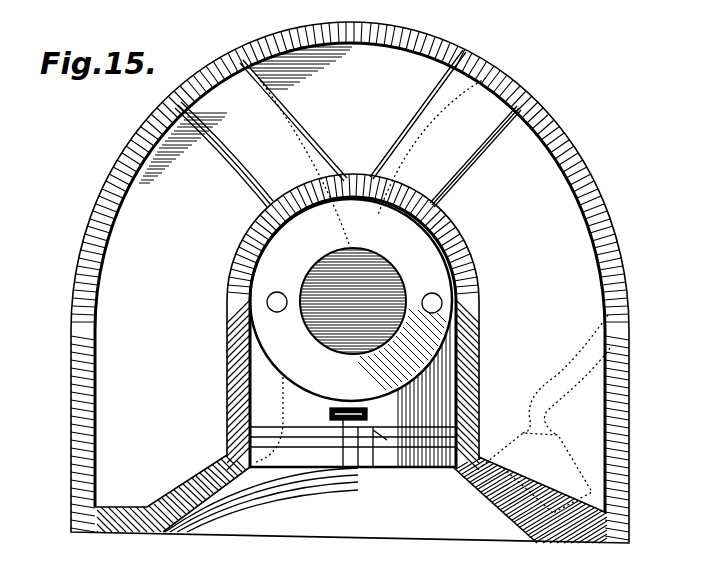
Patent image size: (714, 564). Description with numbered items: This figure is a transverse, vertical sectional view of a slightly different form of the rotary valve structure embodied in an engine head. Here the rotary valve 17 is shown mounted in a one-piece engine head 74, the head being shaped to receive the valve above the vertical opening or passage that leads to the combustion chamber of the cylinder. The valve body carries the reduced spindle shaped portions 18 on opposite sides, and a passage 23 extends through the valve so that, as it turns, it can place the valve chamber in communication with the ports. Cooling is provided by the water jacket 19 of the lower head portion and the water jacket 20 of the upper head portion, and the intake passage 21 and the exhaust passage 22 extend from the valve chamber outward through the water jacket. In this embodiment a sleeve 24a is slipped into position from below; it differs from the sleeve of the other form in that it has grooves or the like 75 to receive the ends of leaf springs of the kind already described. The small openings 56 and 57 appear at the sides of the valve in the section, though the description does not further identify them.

The rotary valve 17 is at (405, 215).
The reduced spindle shaped portions 18 is at (350, 352).
The water jacket 19 is at (214, 434).
The water jacket 20 is at (350, 282).
The intake passage 21 is at (217, 97).
The exhaust passage 22 is at (490, 97).
The passage 23 is at (366, 352).
The sleeve 24a is at (421, 393).
The screw hole 56 is at (271, 310).
The screw hole 57 is at (445, 300).
The one-piece engine head 74 is at (577, 147).
The grooves 75 is at (330, 412).